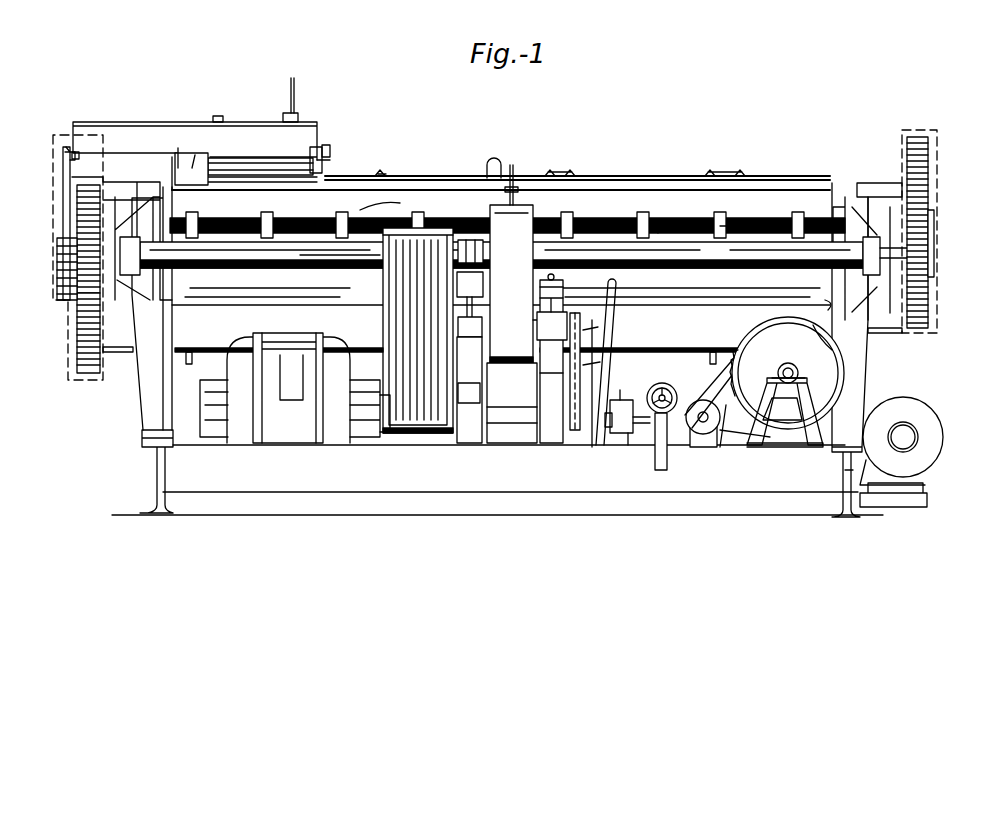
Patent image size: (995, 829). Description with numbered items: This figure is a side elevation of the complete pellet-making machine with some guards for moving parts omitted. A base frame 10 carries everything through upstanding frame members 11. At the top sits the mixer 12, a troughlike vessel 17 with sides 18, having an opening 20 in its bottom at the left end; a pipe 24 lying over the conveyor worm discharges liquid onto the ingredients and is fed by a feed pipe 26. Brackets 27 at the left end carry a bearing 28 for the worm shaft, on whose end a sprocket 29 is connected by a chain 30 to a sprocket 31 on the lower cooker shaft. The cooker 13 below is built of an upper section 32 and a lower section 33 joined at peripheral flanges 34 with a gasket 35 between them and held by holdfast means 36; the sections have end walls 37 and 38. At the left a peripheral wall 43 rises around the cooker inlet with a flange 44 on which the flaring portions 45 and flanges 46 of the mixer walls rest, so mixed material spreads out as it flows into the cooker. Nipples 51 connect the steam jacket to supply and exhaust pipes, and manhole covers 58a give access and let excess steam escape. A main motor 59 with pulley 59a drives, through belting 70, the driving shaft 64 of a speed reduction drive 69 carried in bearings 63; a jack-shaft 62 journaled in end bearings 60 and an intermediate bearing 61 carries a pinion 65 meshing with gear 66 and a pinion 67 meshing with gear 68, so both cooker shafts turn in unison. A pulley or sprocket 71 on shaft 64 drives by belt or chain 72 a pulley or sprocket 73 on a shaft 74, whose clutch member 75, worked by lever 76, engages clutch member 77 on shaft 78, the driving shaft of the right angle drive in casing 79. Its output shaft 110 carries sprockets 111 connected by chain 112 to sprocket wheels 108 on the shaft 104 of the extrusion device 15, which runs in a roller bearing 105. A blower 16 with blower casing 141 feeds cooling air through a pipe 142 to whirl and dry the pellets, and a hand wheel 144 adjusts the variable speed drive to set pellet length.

The base frame 10 is at (332, 488).
The upstanding frame members 11 is at (147, 407).
The mixer 12 is at (314, 144).
The cooker 13 is at (411, 197).
The extrusion device 15 is at (840, 385).
The blower 16 is at (928, 470).
The troughlike vessel 17 is at (307, 136).
The sides 18 is at (235, 130).
The opening 20 is at (192, 155).
The pipe 24 is at (263, 115).
The feed pipe 26 is at (297, 92).
The brackets 27 is at (113, 122).
The bearing 28 is at (82, 152).
The sprocket 29 is at (70, 147).
The chain 30 is at (63, 180).
The sprocket 31 is at (57, 294).
The upper section 32 is at (626, 198).
The lower section 33 is at (832, 320).
The peripheral flanges 34 is at (662, 214).
The gasket 35 is at (748, 214).
The holdfast means 36 is at (360, 215).
The end walls 37 is at (178, 203).
The end walls 38 is at (828, 300).
The peripheral wall 43 is at (180, 173).
The flange 44 is at (212, 175).
The flaring portions 45 is at (180, 158).
The flanges 46 is at (210, 160).
The nipples 51 is at (184, 356).
The covers 58a is at (380, 170).
The main motor 59 is at (297, 440).
The pulley 59a is at (385, 440).
The end bearings 60 is at (150, 268).
The intermediate bearing 61 is at (483, 250).
The shaft 62 is at (300, 268).
The bearings 63 is at (482, 327).
The driving shaft 64 is at (536, 325).
The pinion 65 is at (76, 250).
The gear 66 is at (77, 341).
The pinion 67 is at (934, 248).
The gear 68 is at (928, 157).
The speed reduction drive 69 is at (520, 225).
The belting 70 is at (400, 282).
The pulley or sprocket 71 is at (568, 325).
The belt or chain 72 is at (600, 364).
The pulley or sprocket 73 is at (574, 432).
The shaft 74 is at (592, 449).
The clutch member 75 is at (618, 435).
The lever 76 is at (614, 300).
The clutch member 77 is at (631, 385).
The shaft 78 is at (630, 448).
The right angle drive casing 79 is at (672, 450).
The shaft 104 is at (780, 372).
The roller bearing 105 is at (790, 364).
The sprocket wheels 108 is at (788, 420).
The output shaft 110 is at (706, 398).
The sprockets 111 is at (730, 440).
The chain 112 is at (722, 375).
The blower casing 141 is at (920, 405).
The pipe 142 is at (848, 473).
The hand wheel 144 is at (660, 383).